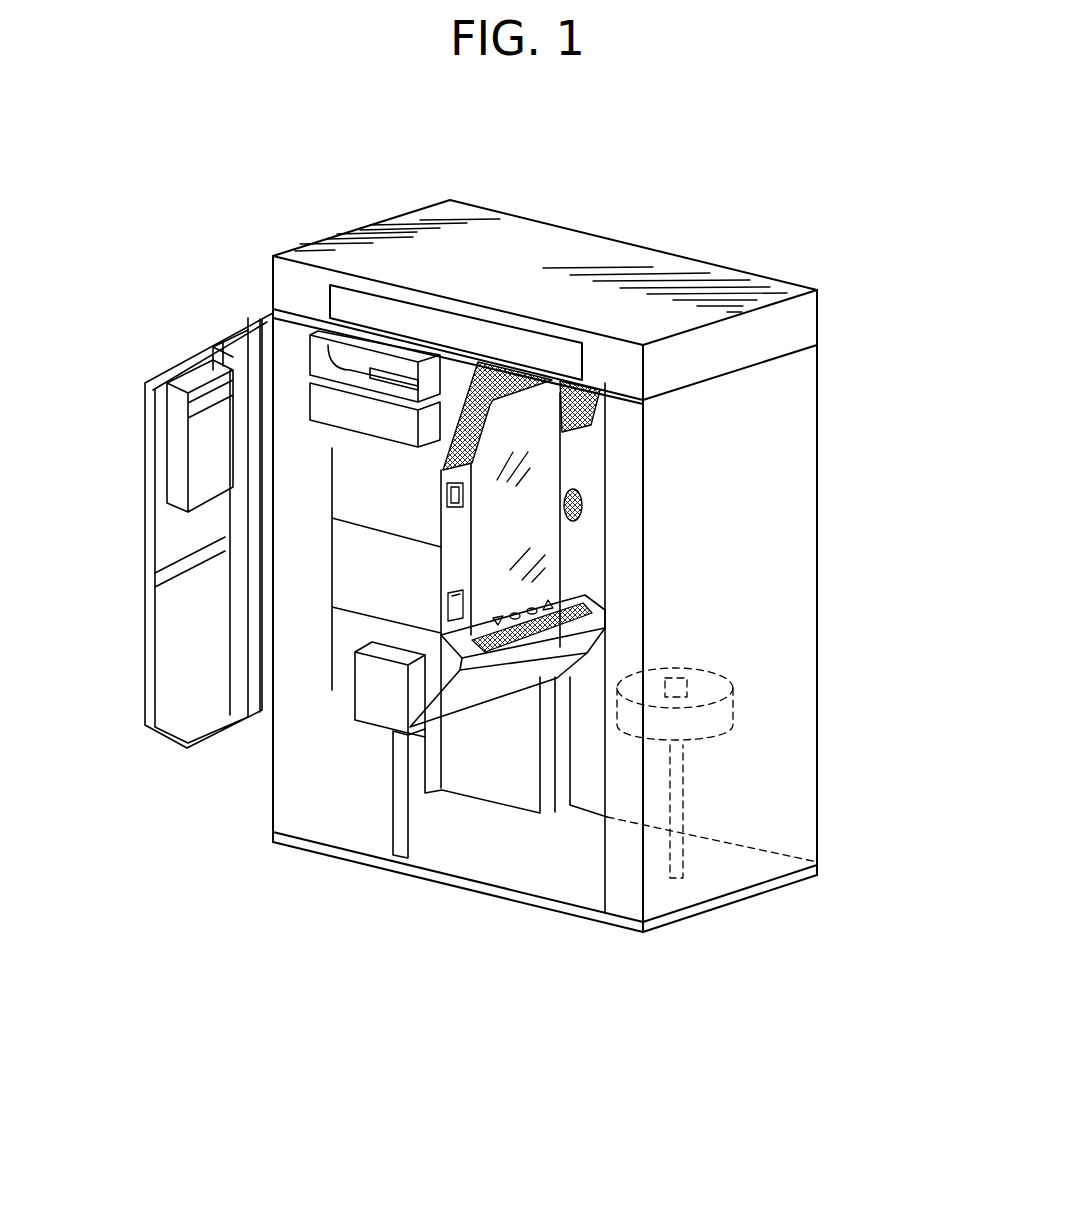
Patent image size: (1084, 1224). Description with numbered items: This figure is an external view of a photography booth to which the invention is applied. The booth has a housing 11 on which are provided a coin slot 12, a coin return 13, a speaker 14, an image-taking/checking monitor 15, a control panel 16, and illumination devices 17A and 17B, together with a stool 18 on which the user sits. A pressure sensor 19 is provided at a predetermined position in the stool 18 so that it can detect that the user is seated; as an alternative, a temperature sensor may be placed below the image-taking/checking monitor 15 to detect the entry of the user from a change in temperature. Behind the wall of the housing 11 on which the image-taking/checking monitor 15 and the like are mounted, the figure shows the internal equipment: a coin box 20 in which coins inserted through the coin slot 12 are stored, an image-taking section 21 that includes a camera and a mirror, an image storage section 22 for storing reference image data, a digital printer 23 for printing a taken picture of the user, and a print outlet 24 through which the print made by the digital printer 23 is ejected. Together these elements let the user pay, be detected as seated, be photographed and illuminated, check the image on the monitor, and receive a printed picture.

The housing 11 is at (520, 878).
The coin slot 12 is at (472, 478).
The coin return 13 is at (440, 612).
The speaker 14 is at (583, 505).
The image-taking/checking monitor 15 is at (540, 540).
The control panel 16 is at (545, 612).
The illumination device 17A is at (585, 603).
The illumination device 17B is at (505, 392).
The stool 18 is at (607, 817).
The pressure sensor 19 is at (733, 688).
The coin box 20 is at (418, 688).
The image-taking section 21 is at (352, 665).
The image storage section 22 is at (333, 410).
The digital printer 23 is at (325, 360).
The print outlet 24 is at (195, 421).